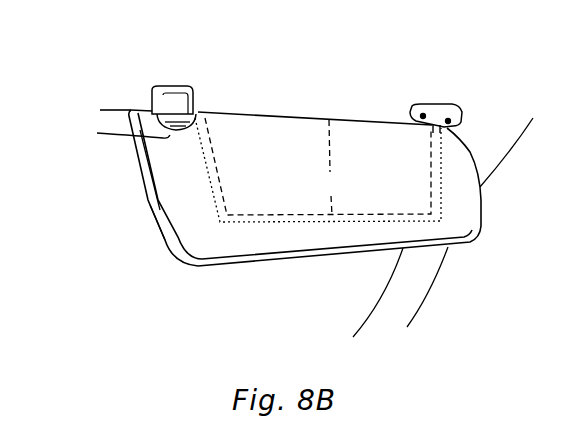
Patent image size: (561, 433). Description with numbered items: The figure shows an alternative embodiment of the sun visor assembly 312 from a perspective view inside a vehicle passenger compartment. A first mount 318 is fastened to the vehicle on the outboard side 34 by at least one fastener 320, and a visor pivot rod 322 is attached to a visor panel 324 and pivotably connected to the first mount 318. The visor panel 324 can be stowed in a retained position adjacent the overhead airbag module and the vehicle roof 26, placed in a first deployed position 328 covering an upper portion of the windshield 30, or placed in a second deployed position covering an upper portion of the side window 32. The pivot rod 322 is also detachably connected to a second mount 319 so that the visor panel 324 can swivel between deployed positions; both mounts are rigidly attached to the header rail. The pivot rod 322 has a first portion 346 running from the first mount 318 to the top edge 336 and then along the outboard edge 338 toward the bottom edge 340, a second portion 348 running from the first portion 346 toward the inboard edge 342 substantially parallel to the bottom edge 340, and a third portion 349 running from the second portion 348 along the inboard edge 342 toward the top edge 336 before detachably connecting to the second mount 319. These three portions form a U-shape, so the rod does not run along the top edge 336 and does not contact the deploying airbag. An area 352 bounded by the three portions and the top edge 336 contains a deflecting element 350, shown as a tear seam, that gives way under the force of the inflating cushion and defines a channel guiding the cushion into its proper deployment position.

The vehicle roof 26 is at (333, 106).
The windshield 30 is at (120, 271).
The side window 32 is at (502, 285).
The outboard side 34 is at (515, 353).
The sun visor assembly 312 is at (390, 97).
The first mount 318 is at (450, 103).
The second mount 319 is at (173, 85).
The fastener 320 is at (457, 117).
The visor pivot rod 322 is at (220, 223).
The visor panel 324 is at (184, 204).
The first deployed position 328 is at (157, 163).
The top edge 336 is at (243, 113).
The outboard edge 338 is at (481, 204).
The bottom edge 340 is at (325, 258).
The inboard edge 342 is at (160, 222).
The first portion 346 is at (447, 173).
The second portion 348 is at (280, 223).
The third portion 349 is at (116, 135).
The deflecting element 350 is at (325, 157).
The area 352 is at (363, 195).